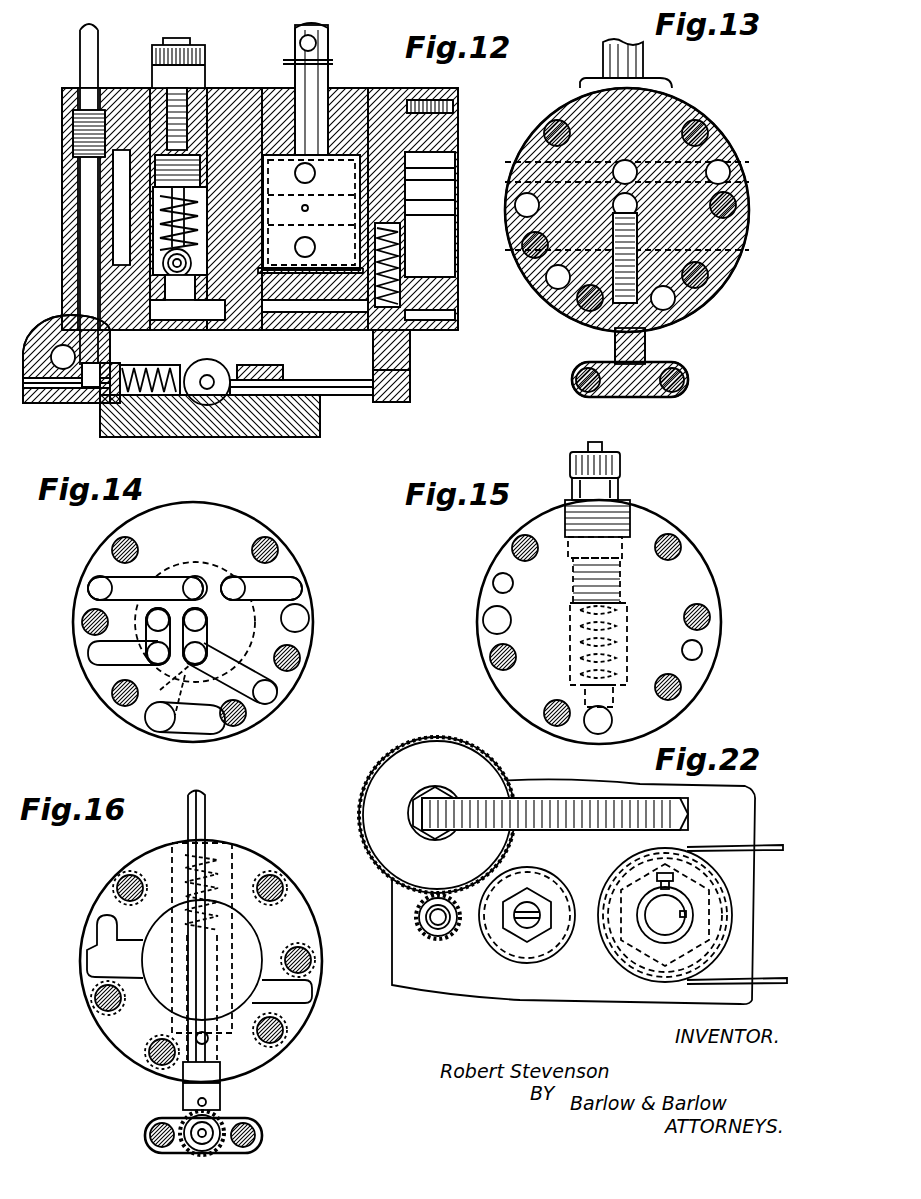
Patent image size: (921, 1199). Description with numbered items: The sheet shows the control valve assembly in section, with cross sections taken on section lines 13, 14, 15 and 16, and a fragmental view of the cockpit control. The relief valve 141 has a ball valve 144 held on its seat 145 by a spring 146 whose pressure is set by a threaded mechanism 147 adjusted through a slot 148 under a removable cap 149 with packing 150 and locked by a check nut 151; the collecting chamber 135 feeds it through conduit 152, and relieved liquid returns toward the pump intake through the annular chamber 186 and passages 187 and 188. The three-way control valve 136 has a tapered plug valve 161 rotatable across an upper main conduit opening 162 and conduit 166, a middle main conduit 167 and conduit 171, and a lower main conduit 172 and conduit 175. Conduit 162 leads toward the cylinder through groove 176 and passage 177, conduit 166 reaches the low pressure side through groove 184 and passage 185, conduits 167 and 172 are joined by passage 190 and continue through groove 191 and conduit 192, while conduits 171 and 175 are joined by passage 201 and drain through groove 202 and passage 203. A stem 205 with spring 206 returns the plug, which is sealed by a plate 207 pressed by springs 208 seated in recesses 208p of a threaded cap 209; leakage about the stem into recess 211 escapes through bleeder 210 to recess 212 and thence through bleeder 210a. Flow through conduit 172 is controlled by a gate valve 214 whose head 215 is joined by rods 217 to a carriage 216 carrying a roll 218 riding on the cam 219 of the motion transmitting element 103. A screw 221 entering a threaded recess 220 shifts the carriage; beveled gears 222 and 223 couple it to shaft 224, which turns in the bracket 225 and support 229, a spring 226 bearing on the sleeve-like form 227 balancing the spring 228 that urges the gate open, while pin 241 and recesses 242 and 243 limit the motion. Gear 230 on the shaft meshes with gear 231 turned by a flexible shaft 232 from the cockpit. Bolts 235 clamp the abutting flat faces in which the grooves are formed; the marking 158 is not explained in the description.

In FIG. 12, the section line 13 is at (432, 71).
In FIG. 12, the section line 14 is at (236, 60).
In FIG. 12, the section line 15 is at (222, 30).
In FIG. 12, the section line 16 is at (142, 74).
In FIG. 12, the motion transmitting element 103 is at (320, 432).
In FIG. 12, the collecting chamber 135 is at (450, 130).
In FIG. 14, the collecting chamber 135 is at (290, 600).
In FIG. 12, the three-way control valve 136 is at (440, 88).
In FIG. 12, the relief valve 141 is at (100, 95).
In FIG. 12, the ball valve 144 is at (163, 262).
In FIG. 15, the ball valve 144 is at (585, 677).
In FIG. 12, the seat 145 is at (100, 308).
In FIG. 12, the spring 146 is at (165, 238).
In FIG. 15, the spring 146 is at (625, 612).
In FIG. 22, the spring 146 is at (515, 928).
In FIG. 12, the threaded mechanism 147 is at (157, 168).
In FIG. 15, the threaded mechanism 147 is at (622, 578).
In FIG. 12, the slot 148 is at (176, 38).
In FIG. 15, the slot 148 is at (595, 442).
In FIG. 12, the removable cap 149 is at (160, 88).
In FIG. 15, the removable cap 149 is at (632, 512).
In FIG. 12, the packing 150 is at (115, 150).
In FIG. 15, the packing 150 is at (625, 542).
In FIG. 12, the check nut 151 is at (195, 45).
In FIG. 15, the check nut 151 is at (620, 465).
In FIG. 22, the check nut 151 is at (532, 930).
In FIG. 13, the conduit 152 is at (676, 300).
In FIG. 14, the conduit 152 is at (158, 718).
In FIG. 15, the conduit 152 is at (597, 722).
In FIG. 12, the section line 158 is at (250, 349).
In FIG. 12, the tapered plug type valve 161 is at (430, 214).
In FIG. 12, the main conduit opening 162 is at (430, 178).
In FIG. 13, the main conduit opening 162 is at (622, 168).
In FIG. 14, the main conduit opening 162 is at (194, 576).
In FIG. 14, the conduit 166 is at (233, 576).
In FIG. 12, the main conduit 167 is at (420, 215).
In FIG. 13, the main conduit 167 is at (622, 200).
In FIG. 14, the main conduit 167 is at (208, 622).
In FIG. 14, the conduit 171 is at (146, 624).
In FIG. 12, the main conduit 172 is at (400, 248).
In FIG. 13, the main conduit 172 is at (640, 252).
In FIG. 14, the main conduit 172 is at (208, 648).
In FIG. 14, the conduit 175 is at (155, 632).
In FIG. 14, the groove 176 is at (118, 577).
In FIG. 12, the passage 177 is at (483, 200).
In FIG. 13, the passage 177 is at (722, 170).
In FIG. 14, the passage 177 is at (95, 588).
In FIG. 14, the groove 184 is at (270, 580).
In FIG. 15, the passage 185 is at (493, 583).
In FIG. 12, the annular chamber 186 is at (123, 207).
In FIG. 16, the annular chamber 186 is at (157, 992).
In FIG. 15, the passage 187 is at (495, 622).
In FIG. 12, the passage 188 is at (488, 268).
In FIG. 14, the passage 188 is at (310, 620).
In FIG. 12, the passage 190 is at (197, 236).
In FIG. 14, the passage 190 is at (162, 670).
In FIG. 13, the groove 191 is at (593, 348).
In FIG. 14, the groove 191 is at (250, 680).
In FIG. 13, the conduit 192 is at (556, 290).
In FIG. 14, the conduit 192 is at (278, 694).
In FIG. 14, the passage 201 is at (147, 655).
In FIG. 14, the groove 202 is at (92, 652).
In FIG. 15, the passage 203 is at (702, 650).
In FIG. 12, the stem 205 is at (320, 25).
In FIG. 22, the stem 205 is at (663, 930).
In FIG. 12, the spring 206 is at (328, 45).
In FIG. 12, the plate 207 is at (455, 158).
In FIG. 12, the springs 208 is at (450, 112).
In FIG. 12, the recesses 208p is at (330, 78).
In FIG. 12, the threaded cap 209 is at (300, 82).
In FIG. 13, the threaded cap 209 is at (665, 82).
In FIG. 12, the bleeder 210 is at (315, 272).
In FIG. 12, the bleeder 210a is at (300, 330).
In FIG. 12, the recess 211 is at (248, 81).
In FIG. 12, the recess 212 is at (301, 373).
In FIG. 12, the gate valve 214 is at (412, 352).
In FIG. 13, the gate valve 214 is at (647, 348).
In FIG. 13, the head 215 is at (640, 397).
In FIG. 12, the carriage 216 is at (290, 437).
In FIG. 13, the rods 217 is at (576, 380).
In FIG. 16, the rods 217 is at (150, 1137).
In FIG. 12, the roll 218 is at (207, 405).
In FIG. 12, the cam 219 is at (253, 398).
In FIG. 12, the threaded recess 220 is at (135, 398).
In FIG. 12, the screw 221 is at (162, 398).
In FIG. 12, the beveled gear 222 is at (75, 393).
In FIG. 16, the beveled gear 222 is at (190, 1150).
In FIG. 12, the beveled gear 223 is at (90, 390).
In FIG. 16, the beveled gear 223 is at (220, 1110).
In FIG. 12, the shaft 224 is at (85, 289).
In FIG. 22, the shaft 224 is at (432, 925).
In FIG. 16, the shaft 224 is at (205, 822).
In FIG. 12, the bracket 225 is at (38, 360).
In FIG. 12, the spring 226 is at (74, 133).
In FIG. 12, the sleeve-like form 227 is at (78, 202).
In FIG. 12, the spring 228 is at (455, 295).
In FIG. 12, the support 229 is at (75, 108).
In FIG. 22, the gear 230 is at (418, 920).
In FIG. 22, the gear 231 is at (375, 800).
In FIG. 22, the flexible shaft 232 is at (547, 800).
In FIG. 13, the bolts 235 is at (736, 205).
In FIG. 14, the bolts 235 is at (278, 548).
In FIG. 15, the bolts 235 is at (680, 545).
In FIG. 16, the bolts 235 is at (152, 1062).
In FIG. 12, the pin 241 is at (455, 312).
In FIG. 12, the recess 242 is at (110, 335).
In FIG. 12, the recess 243 is at (455, 328).